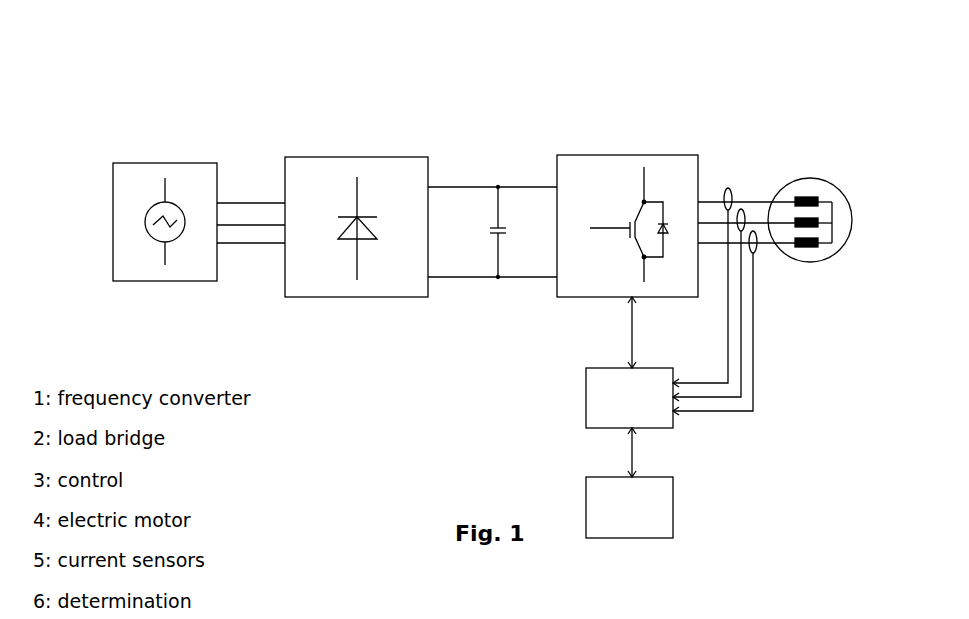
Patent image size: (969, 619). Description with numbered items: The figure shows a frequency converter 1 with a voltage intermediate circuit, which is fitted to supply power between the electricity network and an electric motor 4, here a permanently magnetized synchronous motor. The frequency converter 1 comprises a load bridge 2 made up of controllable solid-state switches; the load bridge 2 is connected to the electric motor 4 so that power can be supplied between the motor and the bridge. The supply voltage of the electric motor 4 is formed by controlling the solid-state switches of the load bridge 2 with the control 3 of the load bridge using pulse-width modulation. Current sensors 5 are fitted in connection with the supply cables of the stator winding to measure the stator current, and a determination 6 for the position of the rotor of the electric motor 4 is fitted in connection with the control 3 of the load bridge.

The frequency converter 1 is at (494, 317).
The load bridge 2 is at (628, 199).
The control 3 is at (586, 395).
The electric motor 4 is at (811, 188).
The current sensors 5 is at (753, 292).
The determination 6 is at (669, 502).